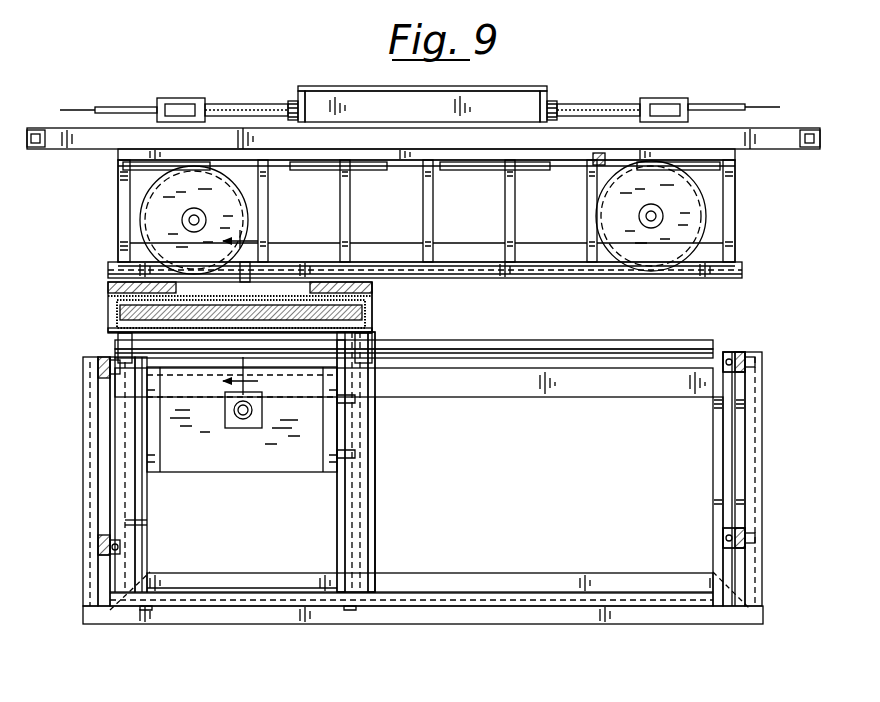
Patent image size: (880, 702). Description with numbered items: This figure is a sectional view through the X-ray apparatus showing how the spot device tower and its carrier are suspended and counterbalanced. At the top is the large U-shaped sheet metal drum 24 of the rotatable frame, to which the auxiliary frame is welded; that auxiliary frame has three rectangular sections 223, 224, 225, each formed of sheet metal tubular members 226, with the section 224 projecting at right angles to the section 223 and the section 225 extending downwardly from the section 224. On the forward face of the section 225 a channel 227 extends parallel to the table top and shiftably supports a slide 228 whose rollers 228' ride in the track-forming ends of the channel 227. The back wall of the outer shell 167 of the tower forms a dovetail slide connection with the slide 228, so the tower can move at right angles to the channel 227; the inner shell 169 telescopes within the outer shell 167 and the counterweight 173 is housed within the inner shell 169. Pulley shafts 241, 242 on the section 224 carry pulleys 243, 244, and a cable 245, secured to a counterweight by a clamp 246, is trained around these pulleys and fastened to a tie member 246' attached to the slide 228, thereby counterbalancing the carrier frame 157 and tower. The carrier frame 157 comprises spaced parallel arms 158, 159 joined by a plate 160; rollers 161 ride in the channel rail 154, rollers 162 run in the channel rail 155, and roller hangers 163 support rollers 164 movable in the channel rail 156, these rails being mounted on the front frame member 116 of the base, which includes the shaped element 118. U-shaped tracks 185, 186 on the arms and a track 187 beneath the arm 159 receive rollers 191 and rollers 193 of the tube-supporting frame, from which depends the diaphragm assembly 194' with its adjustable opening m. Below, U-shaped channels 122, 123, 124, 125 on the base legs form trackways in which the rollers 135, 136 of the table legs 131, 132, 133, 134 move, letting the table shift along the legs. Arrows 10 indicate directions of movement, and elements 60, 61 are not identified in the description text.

The direction arrow 10 is at (231, 313).
The drum 24 is at (500, 100).
The rod end clevis 60 is at (553, 104).
The rod end clevis 61 is at (293, 102).
The rectangular section 223 is at (410, 136).
The rectangular section 224 is at (117, 213).
The rectangular section 225 is at (445, 272).
The sheet metal tubular members 226 is at (505, 226).
The channel 227 is at (690, 272).
The slide 228 is at (426, 224).
The rollers 228' is at (395, 240).
The pulley shaft 241 is at (652, 222).
The pulley shaft 242 is at (197, 210).
The pulley 243 is at (690, 190).
The pulley 244 is at (240, 212).
The cable 245 is at (405, 168).
The clamp 246 is at (569, 178).
The tie member 246' is at (275, 252).
The roller hangers 163 is at (143, 340).
The rollers 164 is at (377, 332).
The rollers 162 is at (108, 339).
The outer shell 167 is at (372, 296).
The inner shell 169 is at (360, 277).
The counterweight 173 is at (110, 301).
The channel rail 155 is at (503, 345).
The channel rail 156 is at (580, 346).
The shaped element 118 is at (570, 397).
The front frame member 116 is at (575, 573).
The channel rail 154 is at (560, 607).
The U-shaped channel 122 is at (763, 430).
The U-shaped channel 123 is at (715, 432).
The U-shaped channel 124 is at (110, 472).
The U-shaped channel 125 is at (85, 460).
The leg 131 is at (105, 555).
The leg 132 is at (100, 375).
The leg 133 is at (745, 535).
The leg 134 is at (745, 357).
The roller 135 is at (110, 377).
The roller 136 is at (83, 358).
The carrier frame 157 is at (378, 543).
The arm 158 is at (140, 538).
The arm 159 is at (375, 520).
The plate 160 is at (245, 590).
The rollers 161 is at (145, 625).
The U-shaped track 185 is at (147, 490).
The U-shaped track 186 is at (337, 500).
The track 187 is at (370, 481).
The rollers 191 is at (150, 393).
The rollers 193 is at (378, 398).
The diaphragm assembly 194' is at (242, 436).
The adjustable opening m is at (232, 430).